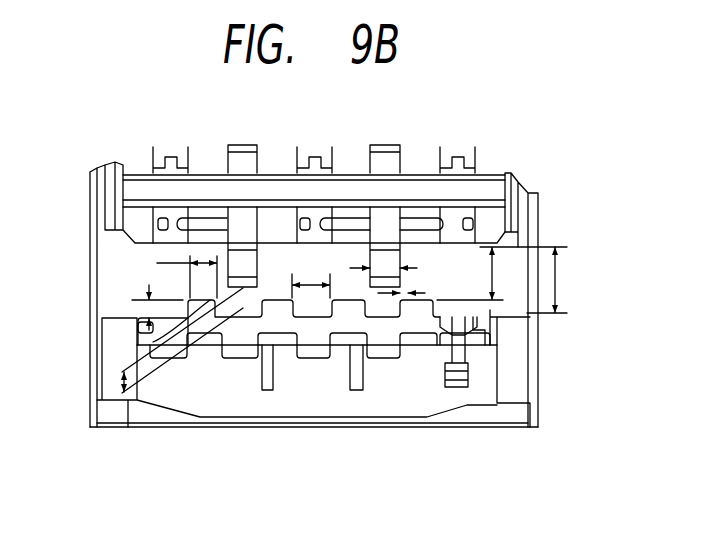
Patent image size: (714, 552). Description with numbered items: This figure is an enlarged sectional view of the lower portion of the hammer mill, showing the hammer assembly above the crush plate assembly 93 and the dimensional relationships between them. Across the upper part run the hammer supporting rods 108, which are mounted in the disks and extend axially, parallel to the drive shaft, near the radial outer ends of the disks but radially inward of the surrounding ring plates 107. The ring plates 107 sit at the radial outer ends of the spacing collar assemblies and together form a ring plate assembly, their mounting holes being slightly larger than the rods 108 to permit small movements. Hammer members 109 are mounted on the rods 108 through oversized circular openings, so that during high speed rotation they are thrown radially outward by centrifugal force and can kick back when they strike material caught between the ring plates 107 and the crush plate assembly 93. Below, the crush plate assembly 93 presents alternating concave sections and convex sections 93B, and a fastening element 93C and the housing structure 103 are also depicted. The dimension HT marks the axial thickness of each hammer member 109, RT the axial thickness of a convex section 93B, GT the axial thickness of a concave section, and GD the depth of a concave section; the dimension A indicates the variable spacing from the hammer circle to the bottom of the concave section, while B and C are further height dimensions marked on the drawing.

The crush plate assembly 93 is at (273, 318).
The convex section 93B is at (137, 338).
The fixing bolt 93C is at (457, 390).
The housing 103 is at (393, 405).
The ring plate 107 is at (170, 220).
The hammer supporting rod 108 is at (407, 190).
The hammer member 109 is at (245, 215).
The axial thickness of convex section RT is at (171, 274).
The axial thickness of concave section GT is at (311, 275).
The axial thickness of hammer member HT is at (310, 483).
The depth of concave section GD is at (135, 302).
The spacing from circle to bottom of concave section A is at (120, 382).
The height dimension B is at (502, 273).
The height dimension C is at (550, 280).